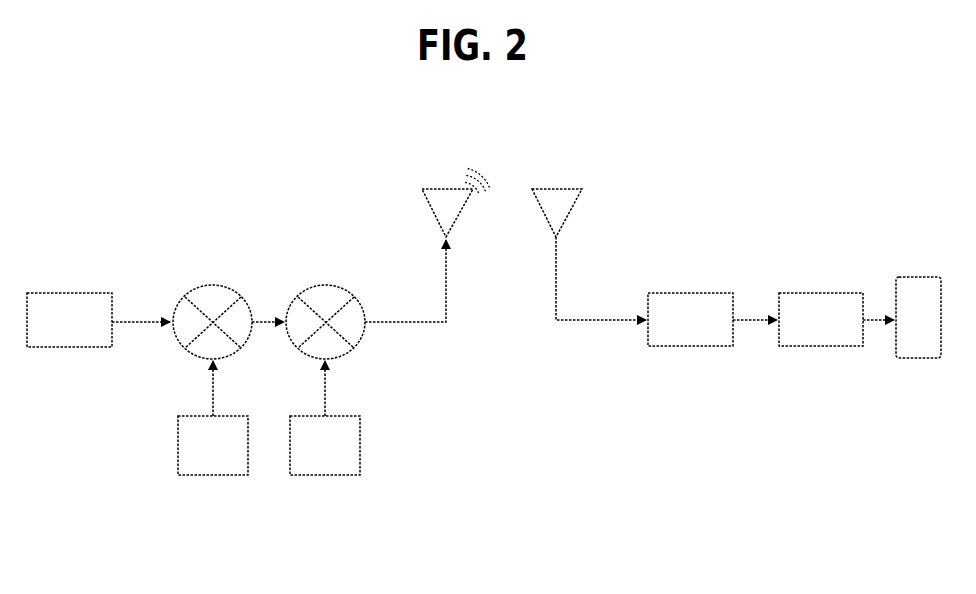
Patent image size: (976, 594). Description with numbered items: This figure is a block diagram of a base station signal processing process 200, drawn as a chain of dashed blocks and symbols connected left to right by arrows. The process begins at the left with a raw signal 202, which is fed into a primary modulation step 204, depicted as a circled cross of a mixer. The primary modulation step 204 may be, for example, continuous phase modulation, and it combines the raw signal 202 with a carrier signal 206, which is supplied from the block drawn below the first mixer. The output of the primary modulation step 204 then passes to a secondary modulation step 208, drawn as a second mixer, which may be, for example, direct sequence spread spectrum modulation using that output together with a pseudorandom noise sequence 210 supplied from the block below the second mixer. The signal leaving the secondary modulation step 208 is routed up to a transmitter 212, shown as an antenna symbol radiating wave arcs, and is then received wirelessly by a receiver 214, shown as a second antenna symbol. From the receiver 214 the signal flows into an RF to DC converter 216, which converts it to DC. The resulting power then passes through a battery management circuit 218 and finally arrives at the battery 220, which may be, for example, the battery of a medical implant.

The base station signal processing process 200 is at (459, 263).
The raw signal 202 is at (67, 288).
The primary modulation step 204 is at (210, 285).
The carrier signal 206 is at (213, 477).
The secondary modulation step 208 is at (322, 285).
The pseudorandom noise sequence 210 is at (328, 477).
The transmitter 212 is at (423, 201).
The receiver 214 is at (563, 189).
The RF to DC converter 216 is at (695, 351).
The battery management circuit 218 is at (822, 350).
The battery 220 is at (918, 275).